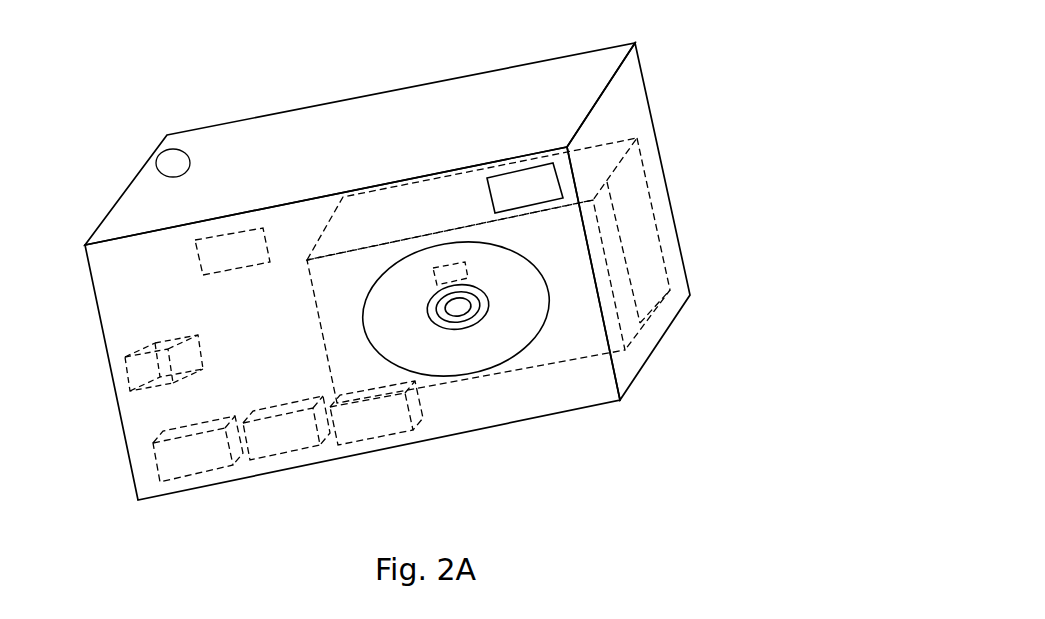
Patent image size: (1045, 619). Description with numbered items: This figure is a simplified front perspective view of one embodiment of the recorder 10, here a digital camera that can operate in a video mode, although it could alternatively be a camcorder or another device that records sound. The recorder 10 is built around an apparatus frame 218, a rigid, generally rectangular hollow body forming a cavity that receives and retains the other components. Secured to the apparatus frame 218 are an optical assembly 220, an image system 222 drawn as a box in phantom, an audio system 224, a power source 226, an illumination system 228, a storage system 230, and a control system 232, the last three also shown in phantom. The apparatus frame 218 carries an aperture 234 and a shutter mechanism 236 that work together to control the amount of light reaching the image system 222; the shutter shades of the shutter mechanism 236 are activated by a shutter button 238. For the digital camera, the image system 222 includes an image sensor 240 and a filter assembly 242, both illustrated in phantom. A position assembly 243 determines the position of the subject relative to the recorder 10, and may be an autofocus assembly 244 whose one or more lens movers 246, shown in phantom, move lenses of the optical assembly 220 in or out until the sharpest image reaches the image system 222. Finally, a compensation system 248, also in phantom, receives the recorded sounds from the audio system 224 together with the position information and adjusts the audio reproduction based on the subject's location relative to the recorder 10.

The recorder 10 is at (158, 127).
The apparatus frame 218 is at (360, 144).
The optical assembly 220 is at (471, 349).
The image system 222 is at (770, 243).
The audio system 224 is at (367, 454).
The power source 226 is at (286, 463).
The illumination system 228 is at (625, 168).
The storage system 230 is at (148, 465).
The control system 232 is at (140, 377).
The aperture 234 is at (477, 387).
The shutter mechanism 236 is at (445, 400).
The shutter button 238 is at (125, 136).
The image sensor 240 is at (690, 252).
The filter assembly 242 is at (701, 313).
The position assembly 243 is at (232, 151).
The autofocus assembly 244 is at (611, 227).
The lens mover 246 is at (415, 153).
The compensation system 248 is at (183, 344).